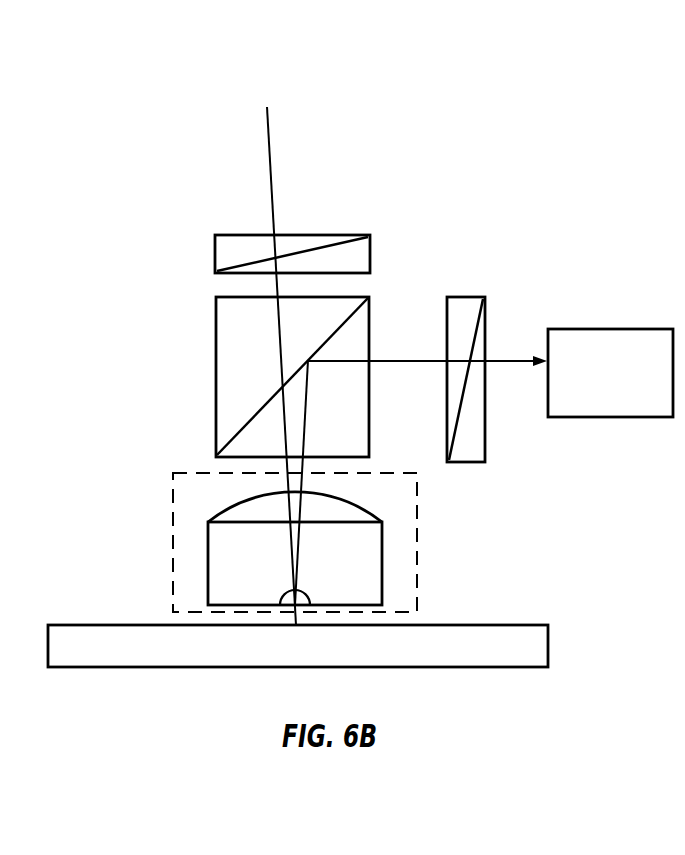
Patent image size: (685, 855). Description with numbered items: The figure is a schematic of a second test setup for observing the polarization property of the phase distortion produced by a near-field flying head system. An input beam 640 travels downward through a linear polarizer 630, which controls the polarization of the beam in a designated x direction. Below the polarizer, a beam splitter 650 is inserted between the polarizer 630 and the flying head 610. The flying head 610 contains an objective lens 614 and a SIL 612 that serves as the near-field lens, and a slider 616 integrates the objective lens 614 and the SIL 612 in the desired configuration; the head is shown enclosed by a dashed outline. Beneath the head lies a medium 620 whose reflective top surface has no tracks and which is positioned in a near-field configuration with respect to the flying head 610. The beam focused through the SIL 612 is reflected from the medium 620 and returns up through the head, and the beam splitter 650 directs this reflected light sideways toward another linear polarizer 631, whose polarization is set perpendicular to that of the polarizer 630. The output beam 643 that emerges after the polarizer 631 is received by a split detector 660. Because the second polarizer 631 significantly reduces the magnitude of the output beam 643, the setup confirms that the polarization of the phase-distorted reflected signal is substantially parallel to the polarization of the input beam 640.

The input beam 640 is at (316, 366).
The linear polarizer 630 is at (302, 233).
The beam splitter 650 is at (243, 377).
The output beam 643 is at (447, 405).
The linear polarizer 631 is at (494, 355).
The split detector 660 is at (610, 350).
The flying head 610 is at (249, 542).
The objective lens 614 is at (232, 470).
The slider 616 is at (232, 563).
The SIL 612 is at (324, 578).
The medium 620 is at (312, 625).